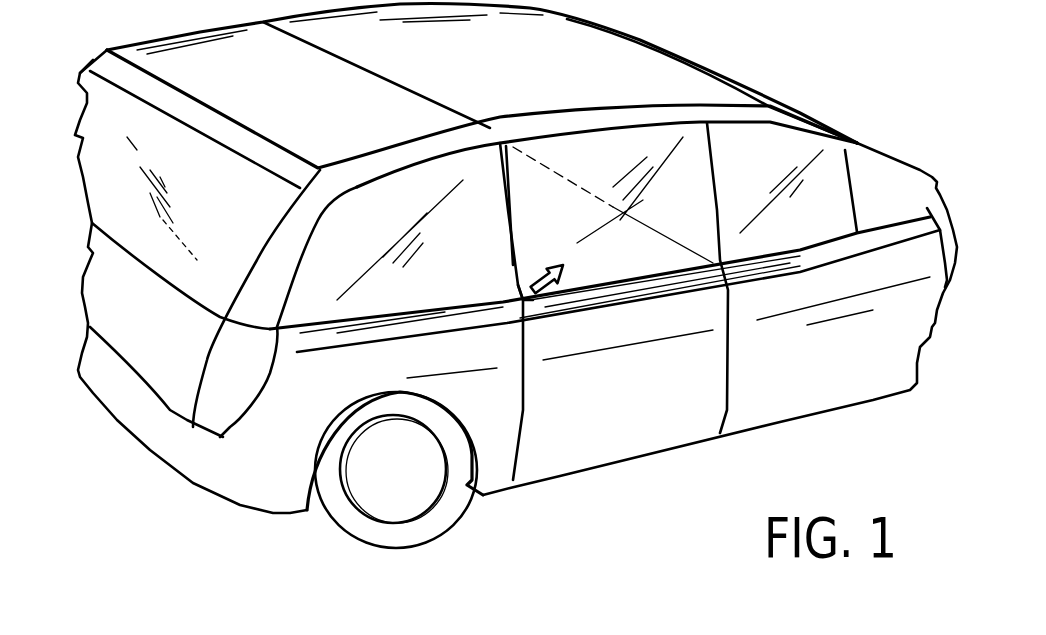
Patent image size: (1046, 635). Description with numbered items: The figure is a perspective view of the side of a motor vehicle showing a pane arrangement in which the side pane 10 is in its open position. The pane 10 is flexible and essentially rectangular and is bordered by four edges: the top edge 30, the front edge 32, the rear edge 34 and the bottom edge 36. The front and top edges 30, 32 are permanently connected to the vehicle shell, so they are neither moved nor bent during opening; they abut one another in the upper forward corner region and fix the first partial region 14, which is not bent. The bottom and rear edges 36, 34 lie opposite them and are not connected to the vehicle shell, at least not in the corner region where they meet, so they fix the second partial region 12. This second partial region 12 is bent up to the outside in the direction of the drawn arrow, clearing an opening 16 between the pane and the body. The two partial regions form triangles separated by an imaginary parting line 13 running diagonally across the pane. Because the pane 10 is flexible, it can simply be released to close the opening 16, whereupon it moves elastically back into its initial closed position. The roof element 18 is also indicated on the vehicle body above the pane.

The pane 10 is at (630, 227).
The second partial region 12 is at (567, 265).
The parting line 13 is at (556, 139).
The first partial region 14 is at (678, 177).
The opening 16 is at (508, 288).
The roof rail 18 is at (668, 108).
The top edge 30 is at (575, 183).
The front edge 32 is at (717, 173).
The rear edge 34 is at (507, 255).
The bottom edge 36 is at (592, 290).